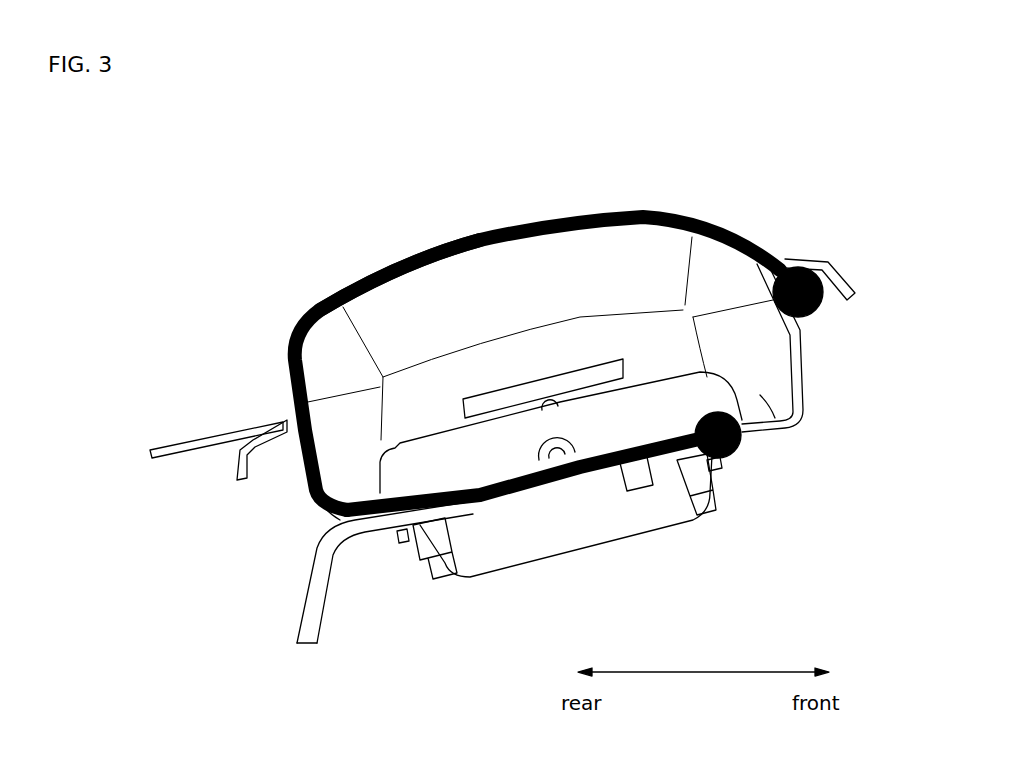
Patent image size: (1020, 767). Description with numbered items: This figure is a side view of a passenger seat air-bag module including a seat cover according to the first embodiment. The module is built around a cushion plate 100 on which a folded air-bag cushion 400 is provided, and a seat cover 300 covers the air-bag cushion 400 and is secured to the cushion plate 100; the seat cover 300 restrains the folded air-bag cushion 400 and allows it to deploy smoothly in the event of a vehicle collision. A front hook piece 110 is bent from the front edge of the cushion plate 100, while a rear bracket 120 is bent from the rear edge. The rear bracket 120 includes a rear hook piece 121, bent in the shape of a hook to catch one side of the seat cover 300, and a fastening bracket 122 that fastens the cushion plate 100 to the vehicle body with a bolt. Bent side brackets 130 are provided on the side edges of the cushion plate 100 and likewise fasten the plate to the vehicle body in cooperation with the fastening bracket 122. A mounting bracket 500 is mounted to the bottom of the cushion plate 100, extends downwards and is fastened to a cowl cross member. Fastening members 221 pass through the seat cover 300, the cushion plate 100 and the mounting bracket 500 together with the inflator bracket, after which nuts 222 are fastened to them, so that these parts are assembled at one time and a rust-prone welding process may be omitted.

The cushion plate 100 is at (315, 498).
The front hook piece 110 is at (820, 272).
The rear bracket 120 is at (118, 500).
The rear hook piece 121 is at (237, 440).
The fastening bracket 122 is at (207, 440).
The side bracket 130 is at (550, 387).
The fastening member 221 is at (700, 487).
The nut 222 is at (710, 470).
The seat cover 300 is at (468, 240).
The air-bag cushion 400 is at (630, 247).
The mounting bracket 500 is at (310, 595).